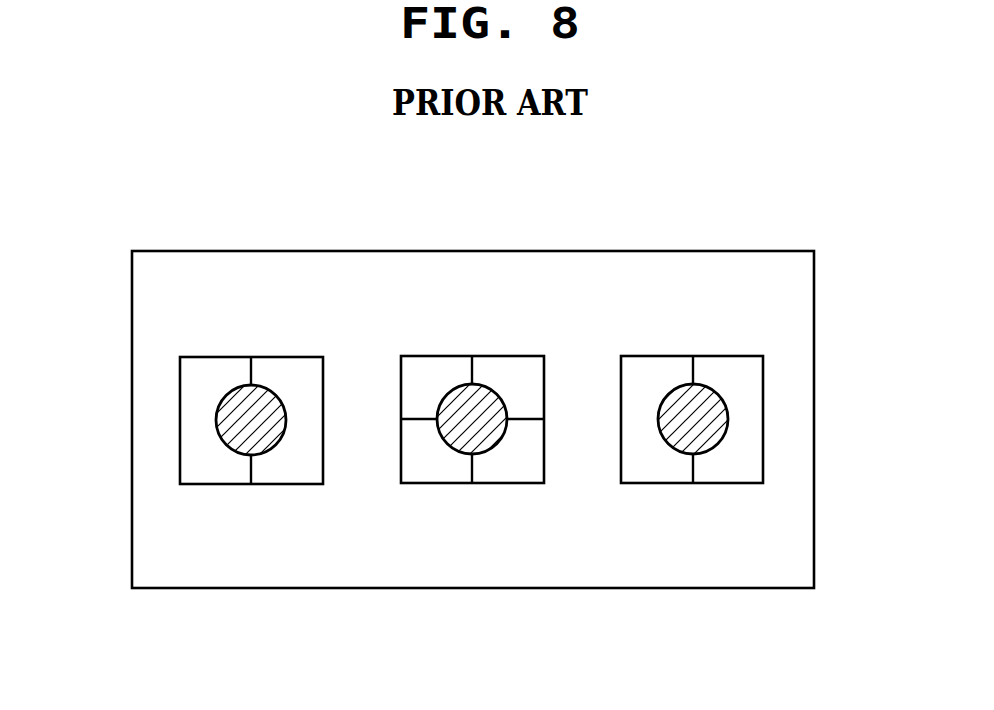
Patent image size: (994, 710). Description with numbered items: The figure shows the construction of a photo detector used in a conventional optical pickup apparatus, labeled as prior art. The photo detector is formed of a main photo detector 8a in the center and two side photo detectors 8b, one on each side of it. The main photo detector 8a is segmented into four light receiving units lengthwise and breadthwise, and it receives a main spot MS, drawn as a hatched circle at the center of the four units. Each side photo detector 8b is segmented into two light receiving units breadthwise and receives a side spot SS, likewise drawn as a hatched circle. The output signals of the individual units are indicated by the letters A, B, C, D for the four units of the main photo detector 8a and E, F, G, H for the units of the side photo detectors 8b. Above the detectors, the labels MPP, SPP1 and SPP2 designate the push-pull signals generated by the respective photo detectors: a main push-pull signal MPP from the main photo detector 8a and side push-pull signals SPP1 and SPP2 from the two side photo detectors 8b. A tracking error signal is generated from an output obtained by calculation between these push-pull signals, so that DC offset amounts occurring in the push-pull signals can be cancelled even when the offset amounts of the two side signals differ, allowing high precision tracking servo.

The main photo detector 8a is at (413, 473).
The side photo detector 8b is at (212, 473).
The main spot MS is at (452, 410).
The side spot SS is at (216, 418).
The main push-pull signal MPP is at (472, 344).
The first side push-pull signal SPP1 is at (692, 344).
The second side push-pull signal SPP2 is at (251, 344).
The output signal A is at (433, 508).
The output signal B is at (511, 508).
The output signal C is at (512, 334).
The output signal D is at (432, 334).
The output signal E is at (730, 334).
The output signal F is at (655, 334).
The output signal G is at (289, 334).
The output signal H is at (215, 334).